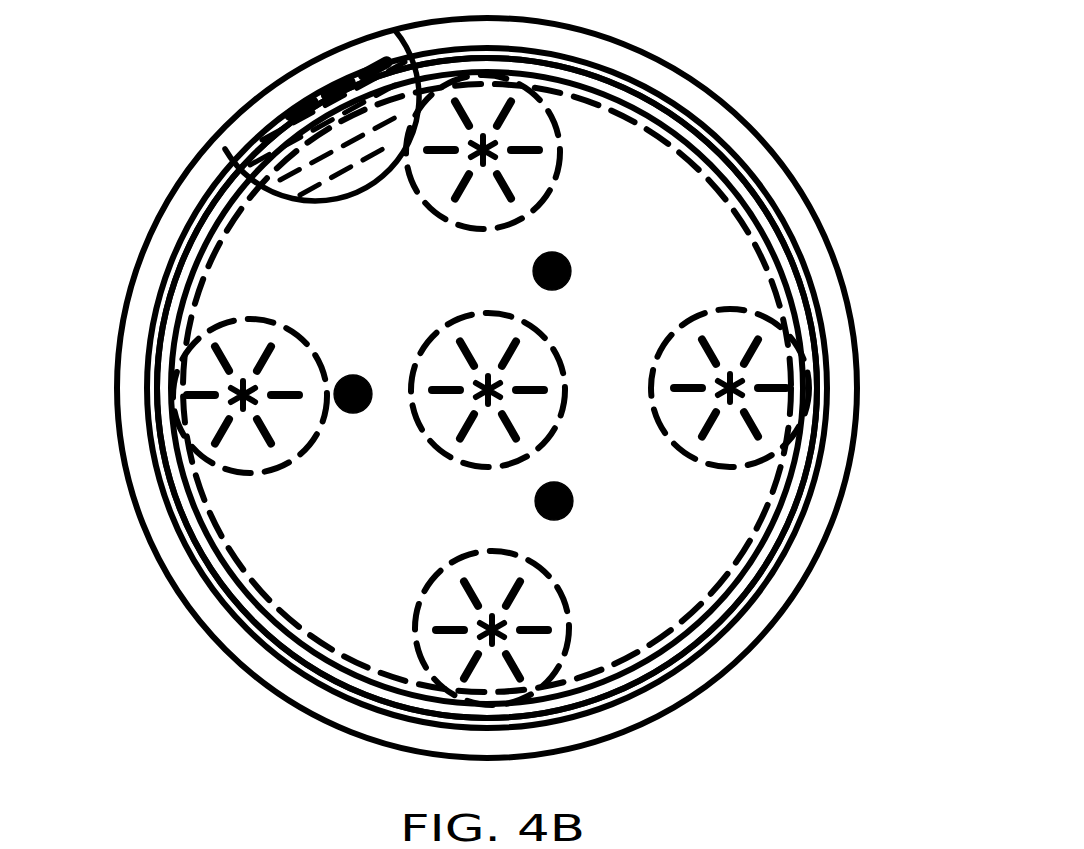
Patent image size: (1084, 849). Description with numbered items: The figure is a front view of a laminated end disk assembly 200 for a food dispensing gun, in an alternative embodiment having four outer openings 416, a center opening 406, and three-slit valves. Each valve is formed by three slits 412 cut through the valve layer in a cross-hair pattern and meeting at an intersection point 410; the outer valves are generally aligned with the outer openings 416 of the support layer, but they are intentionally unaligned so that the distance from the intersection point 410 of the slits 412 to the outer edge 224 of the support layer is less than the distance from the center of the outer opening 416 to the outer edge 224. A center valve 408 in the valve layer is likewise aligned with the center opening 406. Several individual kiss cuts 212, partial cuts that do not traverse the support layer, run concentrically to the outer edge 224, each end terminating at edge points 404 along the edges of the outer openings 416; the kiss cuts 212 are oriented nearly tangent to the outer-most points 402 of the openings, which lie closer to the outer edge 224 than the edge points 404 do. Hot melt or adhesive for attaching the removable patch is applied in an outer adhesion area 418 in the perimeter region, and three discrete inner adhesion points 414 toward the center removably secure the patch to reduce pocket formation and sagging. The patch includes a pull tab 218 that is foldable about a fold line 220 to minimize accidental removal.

The laminated end disk assembly 200 is at (195, 655).
The kiss cut 212 is at (682, 624).
The pull tab 218 is at (340, 173).
The fold line 220 is at (300, 70).
The outer edge 224 is at (720, 620).
The outer-most points 402 is at (790, 388).
The edge points 404 is at (812, 480).
The center opening 406 is at (440, 358).
The center valve 408 is at (525, 375).
The intersection point 410 is at (728, 378).
The slits 412 is at (707, 385).
The inner adhesion points 414 is at (570, 272).
The outer openings 416 is at (500, 550).
The outer adhesion area 418 is at (745, 615).